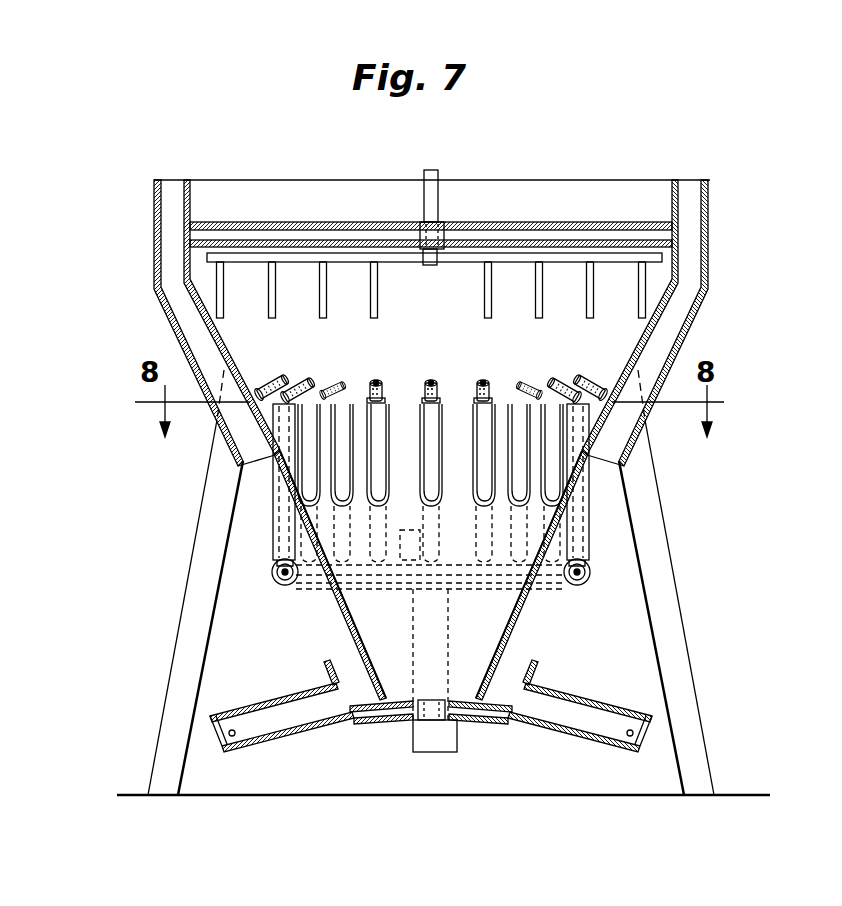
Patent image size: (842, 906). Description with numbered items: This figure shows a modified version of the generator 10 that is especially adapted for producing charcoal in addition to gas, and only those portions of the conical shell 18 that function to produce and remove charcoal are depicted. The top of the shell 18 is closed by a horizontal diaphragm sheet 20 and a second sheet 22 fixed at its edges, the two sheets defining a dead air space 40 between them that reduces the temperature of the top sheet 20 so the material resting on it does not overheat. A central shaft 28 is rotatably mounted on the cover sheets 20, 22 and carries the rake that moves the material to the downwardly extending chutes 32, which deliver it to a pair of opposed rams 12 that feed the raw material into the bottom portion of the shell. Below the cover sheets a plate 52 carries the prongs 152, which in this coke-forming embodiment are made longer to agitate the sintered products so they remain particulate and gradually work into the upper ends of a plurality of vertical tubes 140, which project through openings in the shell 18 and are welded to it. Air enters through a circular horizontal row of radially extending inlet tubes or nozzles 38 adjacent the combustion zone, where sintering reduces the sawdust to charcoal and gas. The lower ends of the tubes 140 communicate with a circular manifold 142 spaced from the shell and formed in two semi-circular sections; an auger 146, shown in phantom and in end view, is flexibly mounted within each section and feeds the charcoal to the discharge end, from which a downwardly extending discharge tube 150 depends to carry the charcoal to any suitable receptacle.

The generator 10 is at (736, 208).
The rams 12 is at (292, 693).
The conical shell 18 is at (642, 357).
The horizontal diaphragm sheet 20 is at (522, 222).
The second sheet 22 is at (472, 248).
The central shaft 28 is at (432, 170).
The downwardly extending chutes 32 is at (192, 310).
The air inlet tubes or nozzles 38 is at (281, 377).
The dead air space 40 is at (317, 240).
The mounting plate 52 is at (293, 253).
The tubes 140 is at (348, 404).
The circular manifold 142 is at (548, 590).
The auger 146 is at (285, 586).
The discharge tube 150 is at (413, 736).
The prongs 152 is at (223, 297).